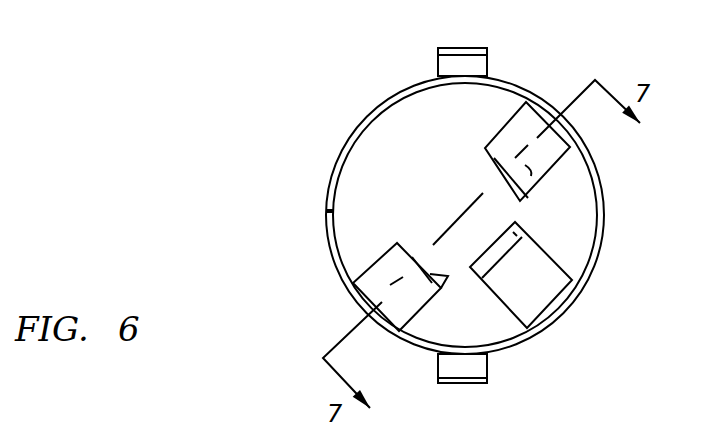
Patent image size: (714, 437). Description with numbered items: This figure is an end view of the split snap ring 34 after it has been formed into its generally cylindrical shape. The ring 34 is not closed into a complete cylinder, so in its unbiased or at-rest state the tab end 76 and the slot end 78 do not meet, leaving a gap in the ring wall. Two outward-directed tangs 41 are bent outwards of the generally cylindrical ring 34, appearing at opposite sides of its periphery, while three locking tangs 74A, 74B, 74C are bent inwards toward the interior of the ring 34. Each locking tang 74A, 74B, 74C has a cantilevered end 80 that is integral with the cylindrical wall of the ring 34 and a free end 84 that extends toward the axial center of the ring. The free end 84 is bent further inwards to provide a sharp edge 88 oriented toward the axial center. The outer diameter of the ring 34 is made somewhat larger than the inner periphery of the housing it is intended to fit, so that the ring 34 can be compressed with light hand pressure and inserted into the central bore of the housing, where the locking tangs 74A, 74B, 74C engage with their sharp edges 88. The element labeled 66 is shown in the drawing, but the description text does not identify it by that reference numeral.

The split snap ring 34 is at (326, 88).
The outward-directed tangs 41 is at (451, 54).
The housing wall 66 is at (518, 82).
The locking tang 74A is at (372, 288).
The locking tang 74B is at (533, 272).
The locking tang 74C is at (527, 193).
The tab end 76 is at (327, 214).
The slot end 78 is at (327, 208).
The cantilevered end 80 is at (565, 312).
The free end 84 is at (515, 222).
The sharp edge 88 is at (523, 165).